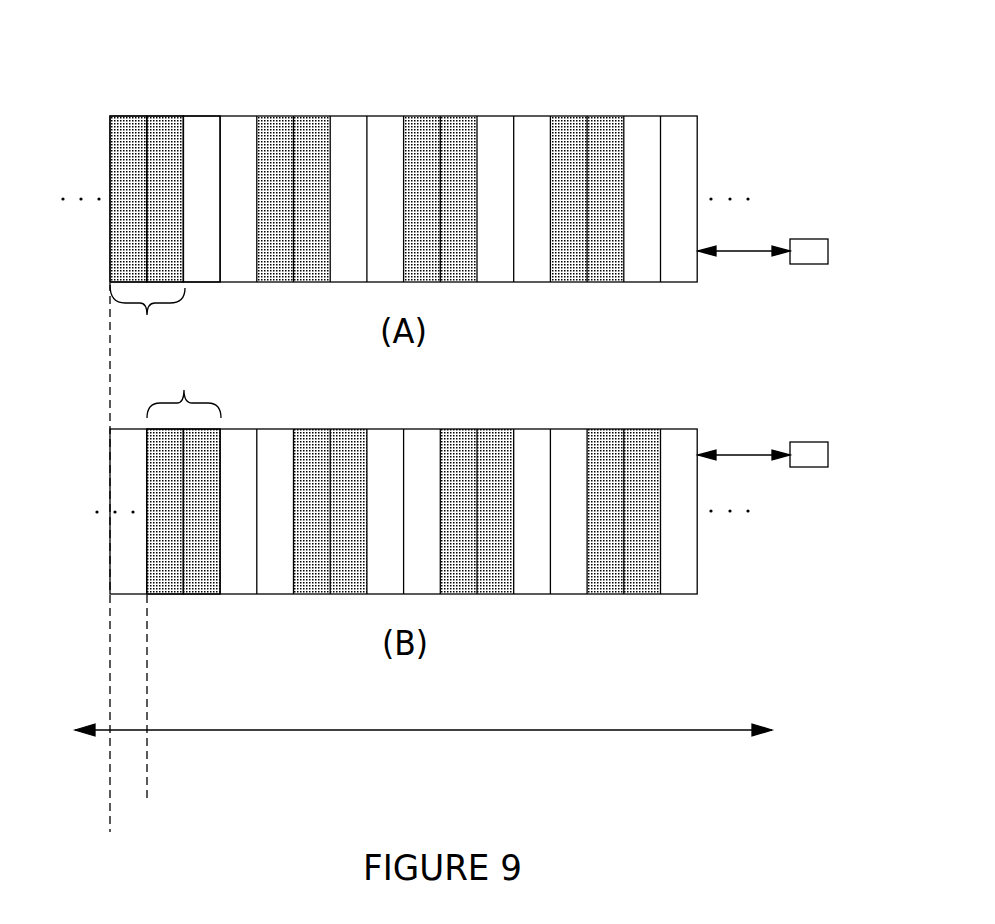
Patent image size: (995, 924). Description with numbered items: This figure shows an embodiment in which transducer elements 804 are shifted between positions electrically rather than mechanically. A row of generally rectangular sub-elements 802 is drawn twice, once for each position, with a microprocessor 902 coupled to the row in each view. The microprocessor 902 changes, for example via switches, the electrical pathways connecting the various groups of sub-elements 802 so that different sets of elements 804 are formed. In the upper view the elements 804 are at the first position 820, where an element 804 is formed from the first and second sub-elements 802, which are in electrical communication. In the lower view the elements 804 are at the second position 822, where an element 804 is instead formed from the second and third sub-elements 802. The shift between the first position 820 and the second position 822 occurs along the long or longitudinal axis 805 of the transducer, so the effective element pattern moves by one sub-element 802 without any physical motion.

The sub-elements 802 is at (682, 116).
The elements 804 is at (173, 303).
The longitudinal axis 805 is at (626, 728).
The first position 820 is at (130, 595).
The second position 822 is at (148, 785).
The microprocessor 902 is at (812, 264).